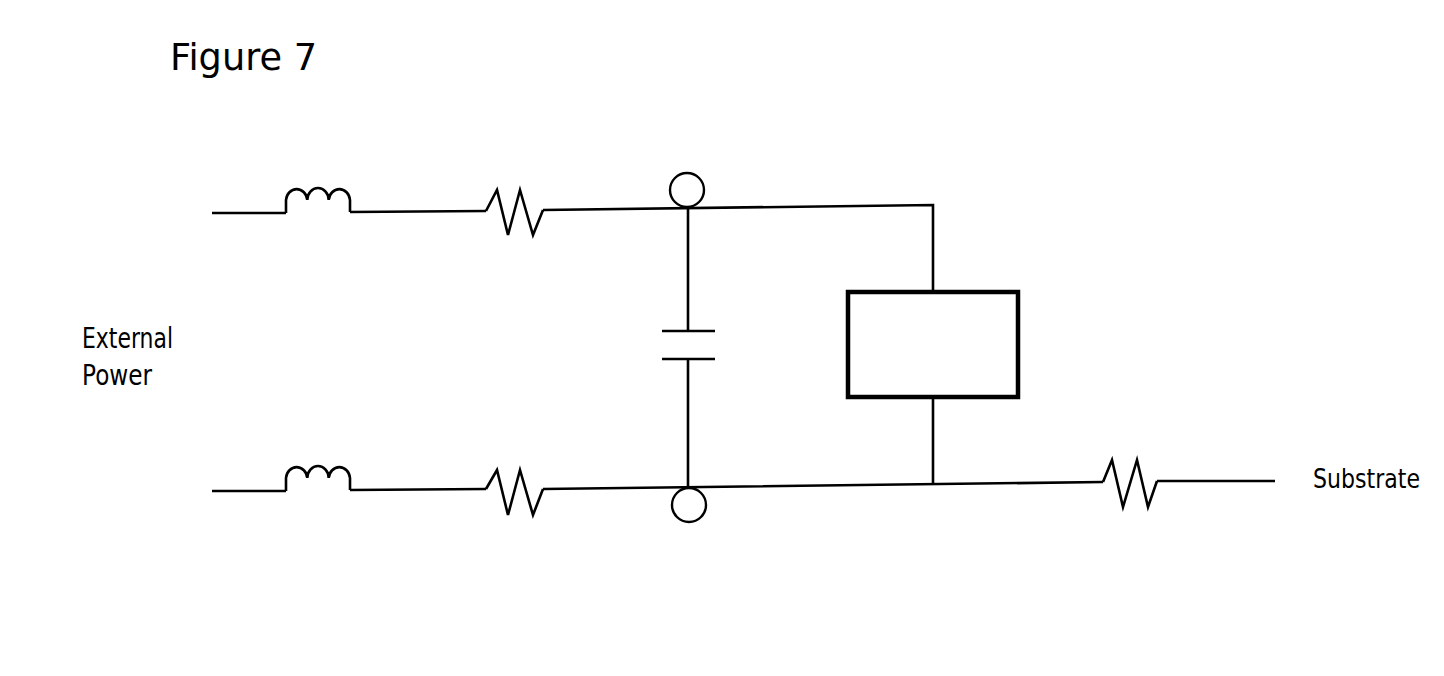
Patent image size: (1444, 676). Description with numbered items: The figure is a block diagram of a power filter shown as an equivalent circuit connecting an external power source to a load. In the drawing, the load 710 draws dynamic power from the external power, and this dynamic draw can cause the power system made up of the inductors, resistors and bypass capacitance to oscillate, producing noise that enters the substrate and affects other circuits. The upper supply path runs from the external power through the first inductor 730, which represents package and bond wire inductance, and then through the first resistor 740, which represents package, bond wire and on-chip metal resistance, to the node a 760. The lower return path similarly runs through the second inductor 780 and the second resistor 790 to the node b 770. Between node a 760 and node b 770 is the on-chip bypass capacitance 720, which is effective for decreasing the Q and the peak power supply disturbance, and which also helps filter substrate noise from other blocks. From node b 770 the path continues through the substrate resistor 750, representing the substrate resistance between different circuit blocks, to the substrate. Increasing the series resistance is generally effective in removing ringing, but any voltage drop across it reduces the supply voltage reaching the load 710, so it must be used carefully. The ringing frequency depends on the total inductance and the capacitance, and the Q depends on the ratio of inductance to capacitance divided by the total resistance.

The load 710 is at (982, 288).
The capacitor CP 720 is at (718, 342).
The inductor L1 730 is at (345, 189).
The resistor R1 740 is at (525, 198).
The resistor R3 to substrate 750 is at (1145, 505).
The node a 760 is at (700, 178).
The node b 770 is at (695, 522).
The inductor L2 780 is at (308, 482).
The resistor R2 790 is at (532, 513).